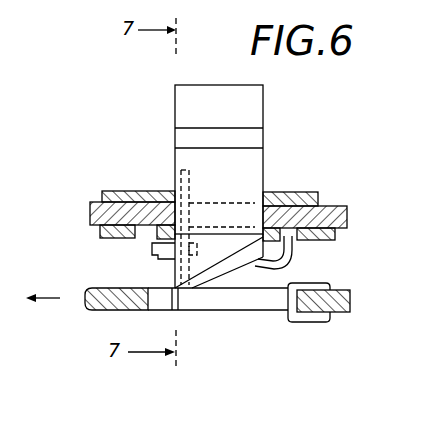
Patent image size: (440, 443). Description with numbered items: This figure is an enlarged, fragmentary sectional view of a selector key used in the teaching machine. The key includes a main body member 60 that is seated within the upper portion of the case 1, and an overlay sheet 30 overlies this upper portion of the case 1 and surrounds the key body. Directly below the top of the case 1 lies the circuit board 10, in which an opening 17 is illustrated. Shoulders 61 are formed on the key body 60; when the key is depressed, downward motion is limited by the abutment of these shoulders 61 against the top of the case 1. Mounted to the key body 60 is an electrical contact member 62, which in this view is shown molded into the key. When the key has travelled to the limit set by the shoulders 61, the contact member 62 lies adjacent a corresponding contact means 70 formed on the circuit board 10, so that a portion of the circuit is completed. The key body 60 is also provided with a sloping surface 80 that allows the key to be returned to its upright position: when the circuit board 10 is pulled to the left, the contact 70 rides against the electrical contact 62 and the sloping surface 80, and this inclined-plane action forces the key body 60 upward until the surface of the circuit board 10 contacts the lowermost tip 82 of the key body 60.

The case 1 is at (337, 220).
The circuit board 10 is at (345, 312).
The opening 17 is at (263, 305).
The overlay sheet 30 is at (283, 193).
The main body member 60 is at (250, 158).
The shoulders 61 is at (183, 135).
The electrical contact member 62 is at (287, 268).
The contact means 70 is at (310, 321).
The sloping surface 80 is at (223, 262).
The lowermost tip 82 is at (173, 312).